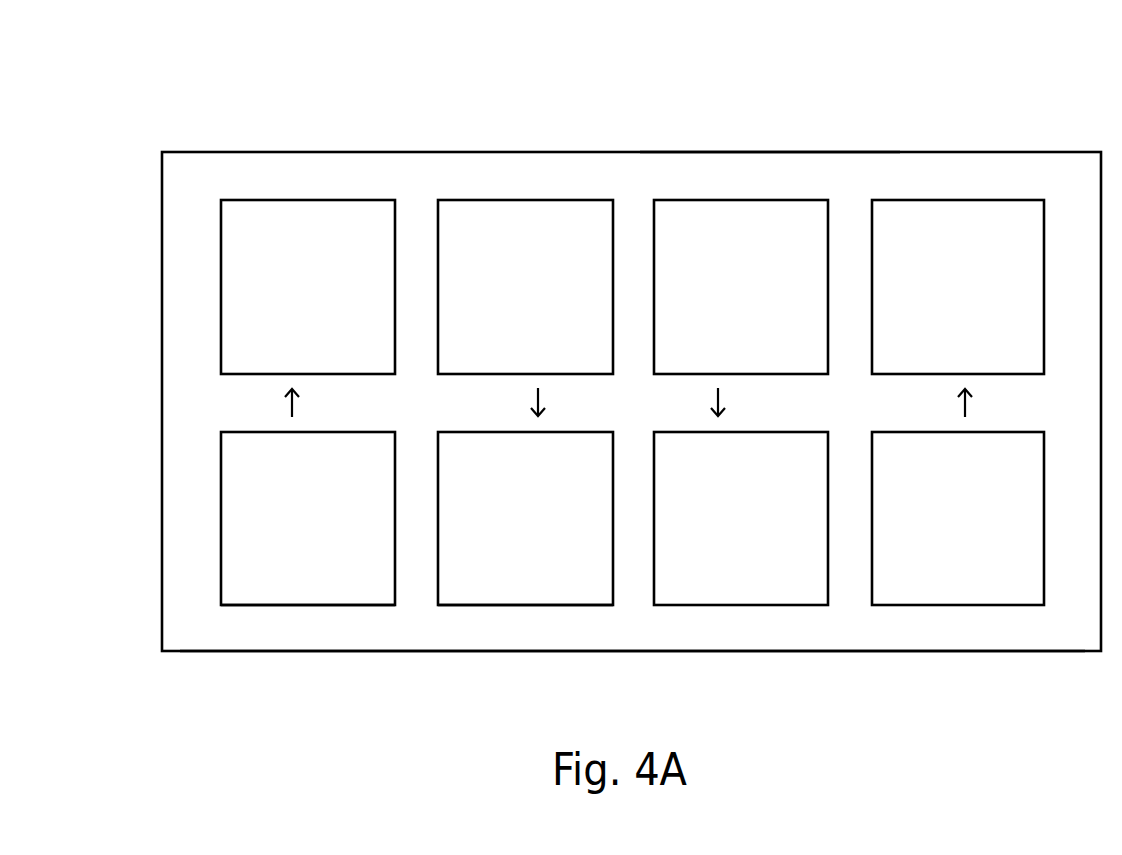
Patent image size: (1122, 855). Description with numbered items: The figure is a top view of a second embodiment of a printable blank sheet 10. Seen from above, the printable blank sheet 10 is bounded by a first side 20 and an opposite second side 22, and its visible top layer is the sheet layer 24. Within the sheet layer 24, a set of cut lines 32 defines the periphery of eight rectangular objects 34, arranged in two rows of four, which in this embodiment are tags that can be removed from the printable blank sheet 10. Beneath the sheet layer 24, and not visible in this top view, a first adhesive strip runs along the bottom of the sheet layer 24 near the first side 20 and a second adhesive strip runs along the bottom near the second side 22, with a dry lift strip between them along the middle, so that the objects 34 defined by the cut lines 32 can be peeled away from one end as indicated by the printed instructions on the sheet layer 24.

The printable blank sheet 10 is at (190, 104).
The first side 20 is at (577, 152).
The second side 22 is at (563, 651).
The sheet layer 24 is at (773, 173).
The cut lines 32 is at (220, 360).
The objects 34 is at (487, 568).